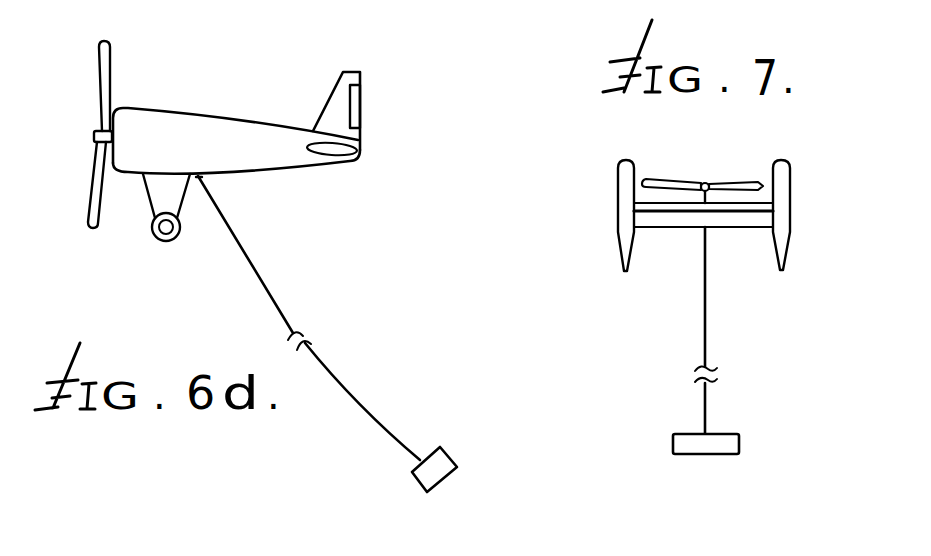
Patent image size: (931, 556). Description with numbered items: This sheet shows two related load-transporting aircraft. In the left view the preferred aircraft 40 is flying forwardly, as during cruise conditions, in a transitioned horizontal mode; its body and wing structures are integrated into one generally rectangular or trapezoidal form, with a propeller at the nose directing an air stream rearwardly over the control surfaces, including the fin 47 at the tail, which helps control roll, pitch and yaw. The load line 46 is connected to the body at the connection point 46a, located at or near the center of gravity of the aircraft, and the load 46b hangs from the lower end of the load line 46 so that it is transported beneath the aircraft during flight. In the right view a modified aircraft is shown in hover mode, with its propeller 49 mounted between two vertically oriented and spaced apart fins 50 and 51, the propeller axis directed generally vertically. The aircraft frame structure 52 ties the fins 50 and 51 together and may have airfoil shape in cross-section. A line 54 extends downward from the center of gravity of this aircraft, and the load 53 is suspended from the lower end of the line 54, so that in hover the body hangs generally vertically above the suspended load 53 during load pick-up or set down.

In FIG. 6D, the aircraft 40 is at (208, 95).
In FIG. 6D, the fin 47 is at (353, 103).
In FIG. 6D, the load line connection point 46a is at (207, 177).
In FIG. 6D, the load line 46 is at (287, 313).
In FIG. 6D, the load 46b is at (413, 477).
In FIG. 7, the propeller 49 is at (662, 187).
In FIG. 7, the fin 50 is at (618, 223).
In FIG. 7, the fin 51 is at (790, 192).
In FIG. 7, the aircraft frame structure 52 is at (738, 217).
In FIG. 7, the load 53 is at (742, 445).
In FIG. 7, the line 54 is at (705, 323).